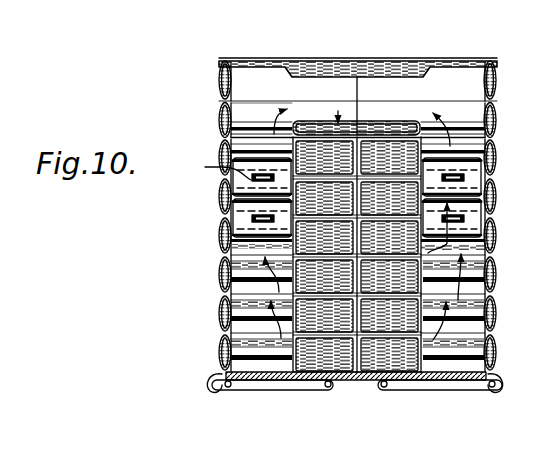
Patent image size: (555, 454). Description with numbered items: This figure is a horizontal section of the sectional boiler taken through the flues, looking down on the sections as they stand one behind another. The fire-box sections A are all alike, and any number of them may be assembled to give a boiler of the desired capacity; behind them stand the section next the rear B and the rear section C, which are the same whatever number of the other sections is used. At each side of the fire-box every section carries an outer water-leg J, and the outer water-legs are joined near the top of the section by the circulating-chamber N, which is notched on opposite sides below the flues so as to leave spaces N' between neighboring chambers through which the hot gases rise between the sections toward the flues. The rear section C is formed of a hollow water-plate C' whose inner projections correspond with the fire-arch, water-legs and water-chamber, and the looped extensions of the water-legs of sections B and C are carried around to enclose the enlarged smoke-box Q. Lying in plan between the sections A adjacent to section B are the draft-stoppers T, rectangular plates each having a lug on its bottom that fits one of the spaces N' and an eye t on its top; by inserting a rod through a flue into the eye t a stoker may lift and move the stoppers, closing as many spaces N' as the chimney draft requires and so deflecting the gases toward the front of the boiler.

The fire-box sections A is at (368, 255).
The section next the rear B is at (369, 121).
The rear section C is at (369, 79).
The hollow water-plate C' is at (358, 56).
The runner D is at (444, 381).
The outer water-leg J is at (232, 89).
The circulating-chamber N is at (357, 256).
The spaces between the chambers N' is at (381, 203).
The smoke-box Q is at (429, 117).
The draft-stopper T is at (324, 237).
The eye t is at (220, 168).